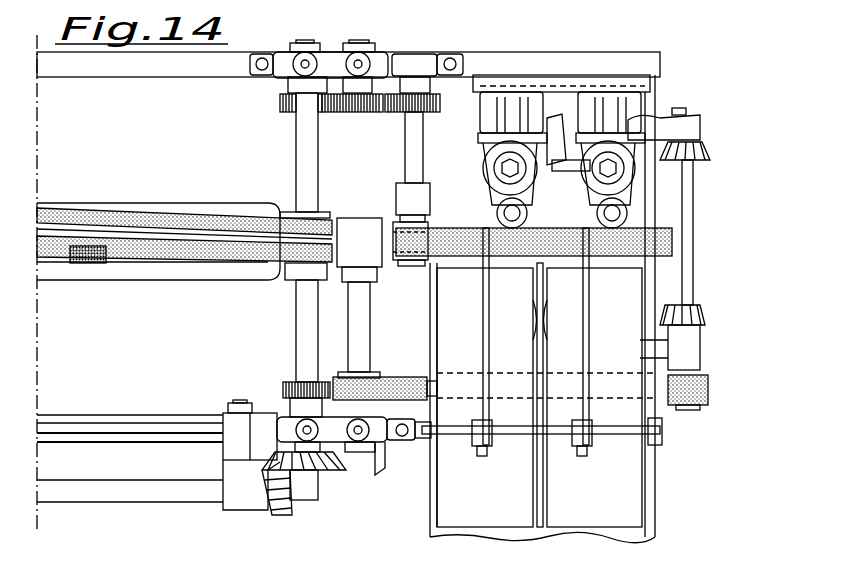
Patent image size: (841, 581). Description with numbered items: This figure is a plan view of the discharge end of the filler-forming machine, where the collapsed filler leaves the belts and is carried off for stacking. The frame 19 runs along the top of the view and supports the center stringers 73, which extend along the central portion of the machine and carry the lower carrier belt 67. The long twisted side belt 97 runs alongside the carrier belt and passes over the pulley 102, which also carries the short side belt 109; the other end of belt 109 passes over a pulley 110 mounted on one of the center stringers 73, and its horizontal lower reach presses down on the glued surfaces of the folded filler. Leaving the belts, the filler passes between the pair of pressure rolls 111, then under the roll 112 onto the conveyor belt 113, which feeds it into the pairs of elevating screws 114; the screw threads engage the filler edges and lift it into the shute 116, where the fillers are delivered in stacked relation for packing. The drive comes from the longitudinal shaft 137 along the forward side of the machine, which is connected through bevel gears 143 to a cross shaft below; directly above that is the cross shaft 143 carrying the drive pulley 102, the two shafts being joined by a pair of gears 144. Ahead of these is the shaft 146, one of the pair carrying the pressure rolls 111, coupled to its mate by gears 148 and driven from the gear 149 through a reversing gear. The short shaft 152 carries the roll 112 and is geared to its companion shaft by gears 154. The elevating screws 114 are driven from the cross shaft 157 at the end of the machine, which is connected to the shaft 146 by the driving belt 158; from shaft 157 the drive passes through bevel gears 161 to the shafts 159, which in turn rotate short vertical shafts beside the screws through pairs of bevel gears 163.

The frame 19 is at (129, 66).
The carrier belt 67 is at (63, 242).
The stringers 73 is at (227, 208).
The side belt 97 is at (153, 195).
The pulley 102 is at (288, 214).
The short side belt 109 is at (203, 256).
The pulley 110 is at (80, 264).
The pressure rolls 111 is at (372, 285).
The roll 112 is at (409, 251).
The conveyor belt 113 is at (470, 222).
The elevating screws 114 is at (508, 211).
The shute 116 is at (633, 476).
The shaft 137 is at (132, 493).
The cross shaft 143 is at (308, 313).
The gears 144 is at (283, 389).
The shaft 146 is at (362, 324).
The gears 148 is at (345, 110).
The gear 149 is at (283, 98).
The short shaft 152 is at (414, 149).
The gears 154 is at (431, 111).
The cross shaft 157 is at (689, 268).
The driving belt 158 is at (420, 363).
The shafts 159 is at (562, 163).
The bevel gears 161 is at (698, 162).
The bevel gears 163 is at (522, 183).